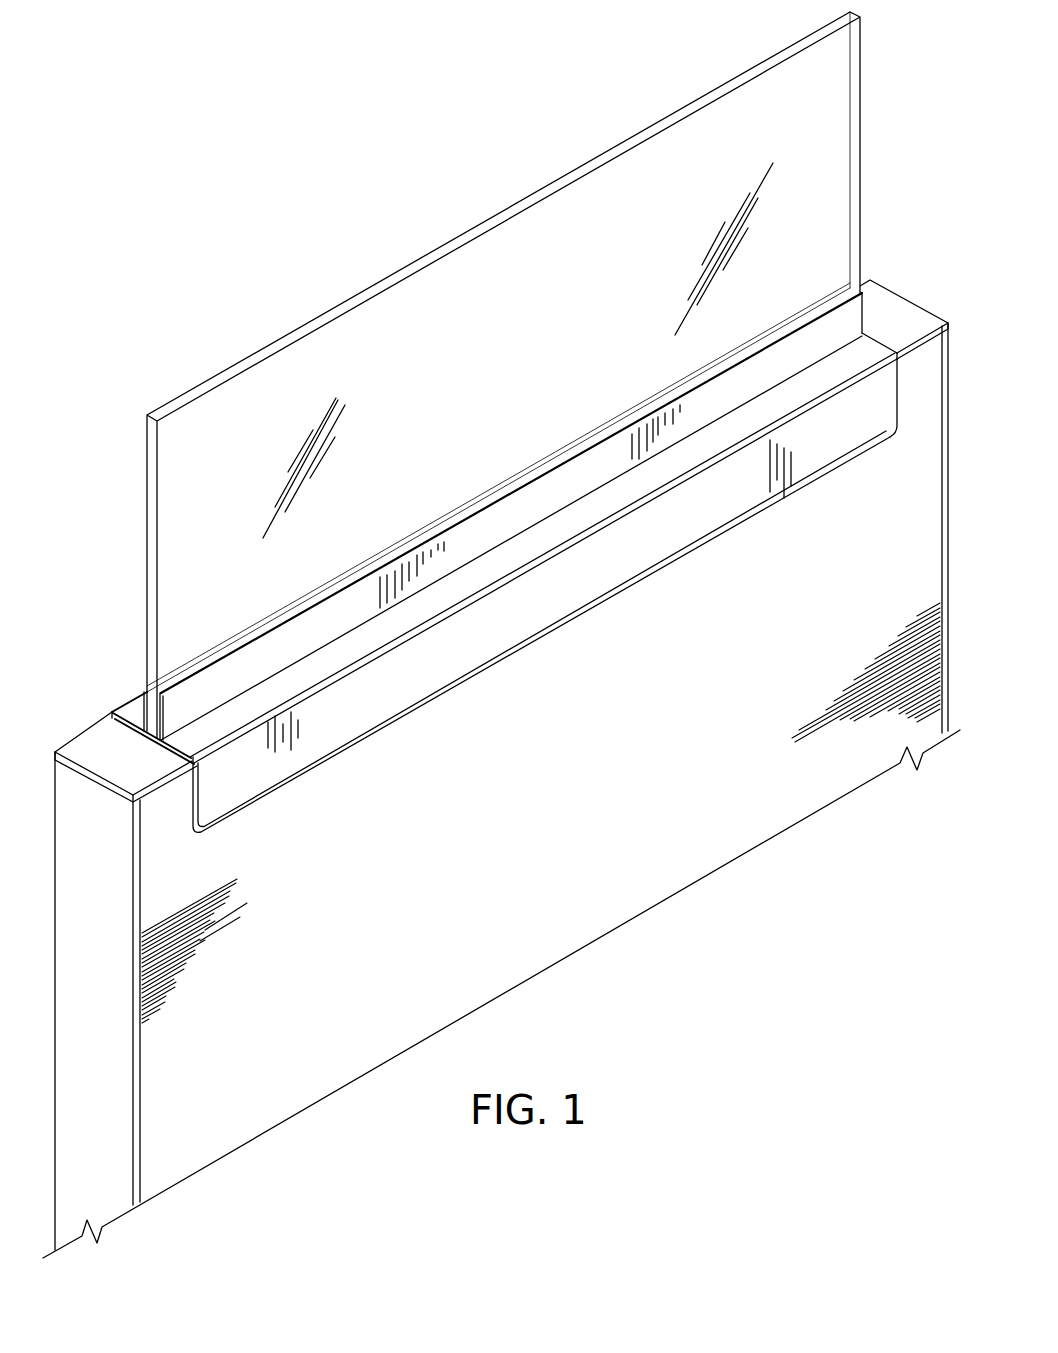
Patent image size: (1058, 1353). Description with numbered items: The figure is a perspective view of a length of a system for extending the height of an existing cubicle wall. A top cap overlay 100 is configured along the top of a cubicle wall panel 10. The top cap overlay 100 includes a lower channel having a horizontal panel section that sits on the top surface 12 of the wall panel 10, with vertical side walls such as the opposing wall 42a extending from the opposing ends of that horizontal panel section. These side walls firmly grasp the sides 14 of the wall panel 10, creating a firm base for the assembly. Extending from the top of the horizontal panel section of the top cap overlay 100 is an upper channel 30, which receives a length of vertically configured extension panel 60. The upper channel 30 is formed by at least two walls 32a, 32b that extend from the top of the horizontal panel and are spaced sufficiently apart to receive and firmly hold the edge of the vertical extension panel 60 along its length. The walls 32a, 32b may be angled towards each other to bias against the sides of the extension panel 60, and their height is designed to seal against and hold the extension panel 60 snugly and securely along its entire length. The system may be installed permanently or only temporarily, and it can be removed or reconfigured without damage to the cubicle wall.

The cubicle wall panel 10 is at (500, 988).
The top surface 12 is at (92, 745).
The sides 14 is at (926, 362).
The upper channel 30 is at (817, 309).
The wall 32a is at (192, 703).
The wall 32b is at (143, 715).
The opposing wall 42a is at (838, 445).
The vertical extension panel 60 is at (475, 228).
The top cap overlay 100 is at (579, 623).